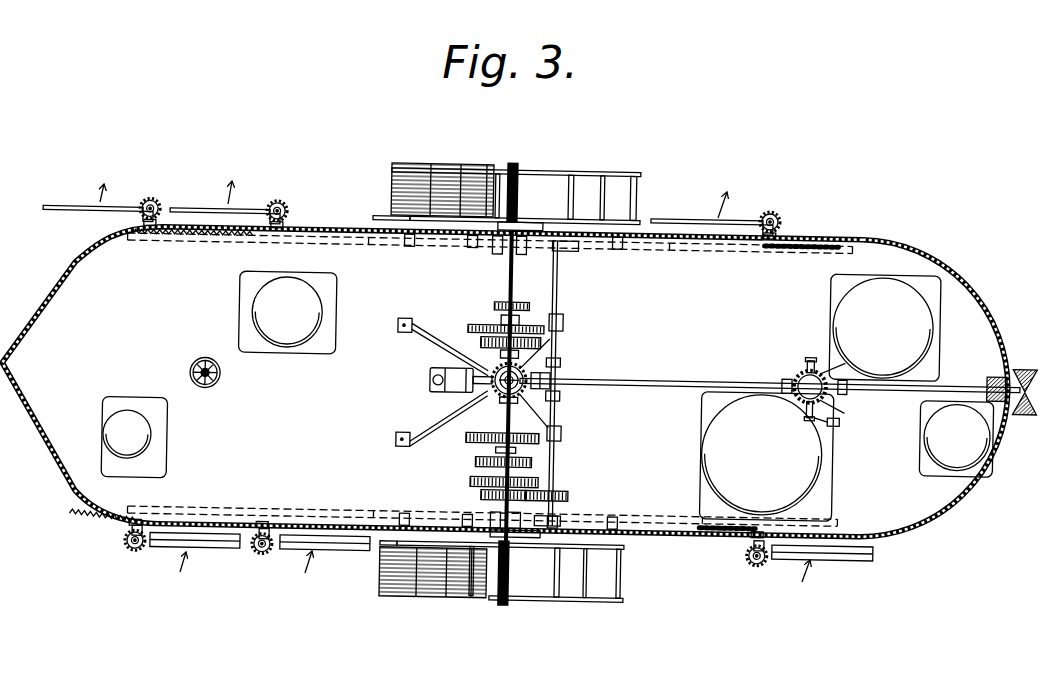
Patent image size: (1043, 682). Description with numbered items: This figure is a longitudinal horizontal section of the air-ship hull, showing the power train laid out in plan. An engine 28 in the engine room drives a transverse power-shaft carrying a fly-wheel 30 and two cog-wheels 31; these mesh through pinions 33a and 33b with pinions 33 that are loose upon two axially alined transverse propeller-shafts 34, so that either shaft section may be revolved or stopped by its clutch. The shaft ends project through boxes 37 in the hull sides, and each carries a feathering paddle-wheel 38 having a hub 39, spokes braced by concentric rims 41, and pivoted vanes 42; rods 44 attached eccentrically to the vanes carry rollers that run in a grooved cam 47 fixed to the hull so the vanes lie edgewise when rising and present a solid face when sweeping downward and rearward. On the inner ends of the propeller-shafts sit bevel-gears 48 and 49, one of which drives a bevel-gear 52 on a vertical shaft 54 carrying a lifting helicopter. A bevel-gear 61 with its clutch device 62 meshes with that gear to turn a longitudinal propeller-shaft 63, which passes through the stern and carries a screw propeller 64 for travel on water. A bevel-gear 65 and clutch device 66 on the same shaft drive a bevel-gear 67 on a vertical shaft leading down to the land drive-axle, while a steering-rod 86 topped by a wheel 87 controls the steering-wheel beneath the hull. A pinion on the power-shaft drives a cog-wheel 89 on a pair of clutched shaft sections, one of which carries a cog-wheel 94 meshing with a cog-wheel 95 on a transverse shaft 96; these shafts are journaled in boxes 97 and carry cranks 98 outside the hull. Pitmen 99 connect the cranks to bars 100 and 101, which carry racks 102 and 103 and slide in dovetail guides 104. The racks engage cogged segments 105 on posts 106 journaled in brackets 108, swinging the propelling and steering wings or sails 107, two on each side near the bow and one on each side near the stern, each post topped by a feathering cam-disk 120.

The engine 28 is at (436, 372).
The fly-wheel 30 is at (566, 322).
The cog-wheel 31 is at (556, 315).
The pinion 33 is at (522, 308).
The pinion 33a is at (467, 327).
The pinion 33b is at (495, 325).
The propeller-shaft 34 is at (510, 278).
The box 37 is at (497, 250).
The propeller-wheel 38 is at (553, 386).
The hub 39 is at (518, 170).
The rim 41 is at (605, 170).
The vane 42 is at (571, 613).
The rod 44 is at (405, 218).
The cam 47 is at (553, 387).
The bevel-gear 48 is at (540, 343).
The bevel-gear 49 is at (548, 390).
The bevel-gear 52 is at (490, 397).
The vertical shaft 54 is at (496, 362).
The bevel-gear 61 is at (551, 358).
The clutch device 62 is at (565, 370).
The propeller-shaft 63 is at (877, 401).
The screw propeller 64 is at (1026, 410).
The bevel-gear 65 is at (834, 420).
The clutch device 66 is at (838, 400).
The bevel-gear 67 is at (807, 372).
The steering-rod 86 is at (195, 363).
The wheel 87 is at (208, 385).
The cog-wheel 89 is at (472, 481).
The cog-wheel 94 is at (484, 496).
The cog-wheel 95 is at (572, 497).
The shaft 96 is at (565, 519).
The box 97 is at (558, 249).
The crank 98 is at (488, 250).
The pitman 99 is at (468, 242).
The bar 100 is at (667, 244).
The bar 101 is at (366, 237).
The rack 102 is at (806, 248).
The rack 103 is at (172, 232).
The dovetail guide 104 is at (232, 236).
The cogged segment 105 is at (155, 199).
The post 106 is at (160, 215).
The wing or sail 107 is at (76, 208).
The bracket 108 is at (143, 218).
The cam-disk 120 is at (149, 204).